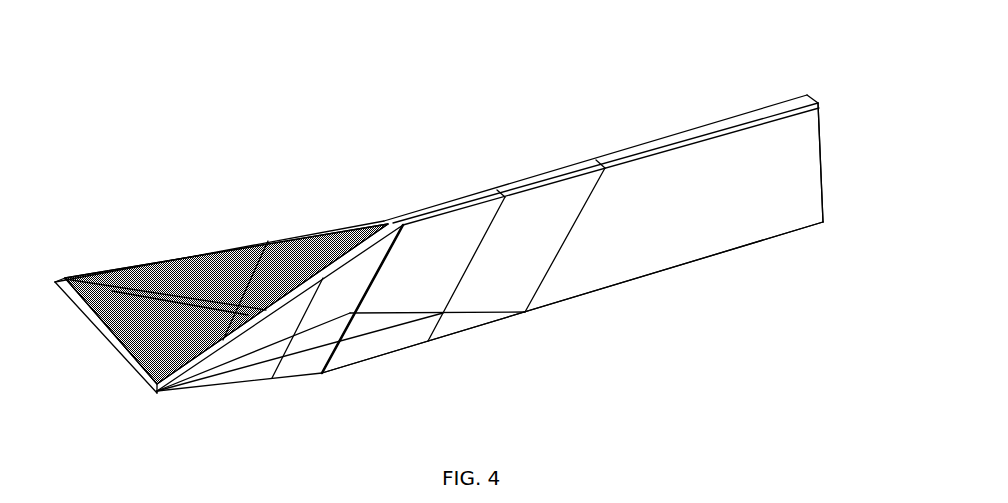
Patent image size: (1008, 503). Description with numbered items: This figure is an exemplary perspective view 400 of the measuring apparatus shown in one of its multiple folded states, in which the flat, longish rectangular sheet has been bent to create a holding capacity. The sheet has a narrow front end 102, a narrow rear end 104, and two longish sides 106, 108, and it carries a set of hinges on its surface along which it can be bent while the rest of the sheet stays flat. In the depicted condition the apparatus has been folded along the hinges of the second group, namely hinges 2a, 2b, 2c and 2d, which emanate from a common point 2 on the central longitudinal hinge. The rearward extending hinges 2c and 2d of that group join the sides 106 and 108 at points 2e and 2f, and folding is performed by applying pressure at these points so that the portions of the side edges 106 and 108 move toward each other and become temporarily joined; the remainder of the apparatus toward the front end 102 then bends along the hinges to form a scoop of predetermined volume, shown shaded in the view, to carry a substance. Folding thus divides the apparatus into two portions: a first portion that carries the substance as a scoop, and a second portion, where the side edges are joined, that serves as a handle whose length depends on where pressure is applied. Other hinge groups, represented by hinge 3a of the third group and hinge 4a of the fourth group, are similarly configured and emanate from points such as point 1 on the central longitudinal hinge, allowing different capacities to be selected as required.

The exemplary perspective view of measuring apparatus 400 is at (95, 86).
The point 1 is at (826, 222).
The wedge edge portion 2 is at (324, 374).
The hinge 2a is at (112, 289).
The hinge 2b is at (249, 383).
The hinge 2c is at (381, 223).
The hinge 2d is at (374, 282).
The point 2e is at (392, 219).
The point 2f is at (406, 223).
The hinge 3a is at (571, 173).
The hinge 4a is at (519, 179).
The front end 102 is at (120, 352).
The rear end 104 is at (825, 157).
The side 106 is at (722, 118).
The side 108 is at (723, 133).